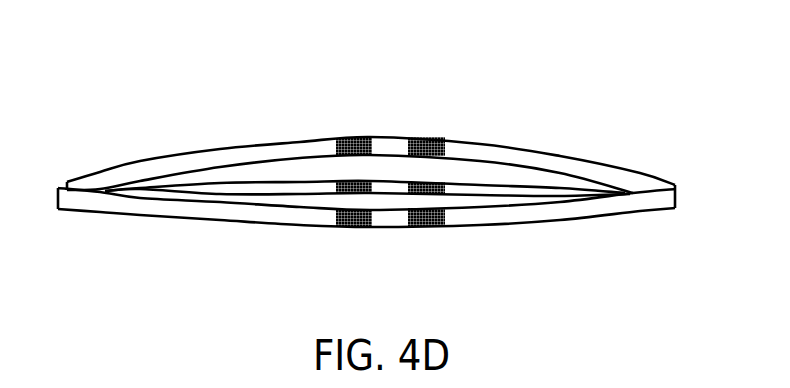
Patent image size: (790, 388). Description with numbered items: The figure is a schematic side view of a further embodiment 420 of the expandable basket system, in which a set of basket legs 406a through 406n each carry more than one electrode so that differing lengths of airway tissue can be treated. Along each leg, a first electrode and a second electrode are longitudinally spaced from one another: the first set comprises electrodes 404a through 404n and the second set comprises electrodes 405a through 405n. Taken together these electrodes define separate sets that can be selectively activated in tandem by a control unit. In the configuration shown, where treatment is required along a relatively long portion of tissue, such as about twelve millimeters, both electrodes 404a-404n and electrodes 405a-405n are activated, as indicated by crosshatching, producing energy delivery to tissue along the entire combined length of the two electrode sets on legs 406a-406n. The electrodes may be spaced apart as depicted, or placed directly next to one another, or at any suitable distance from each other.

The further embodiment 420 is at (126, 115).
The electrode 404a is at (345, 137).
The electrode 405a is at (427, 138).
The basket leg 406a is at (490, 145).
The electrode 404n is at (349, 227).
The electrode 405n is at (428, 227).
The basket leg 406n is at (484, 226).